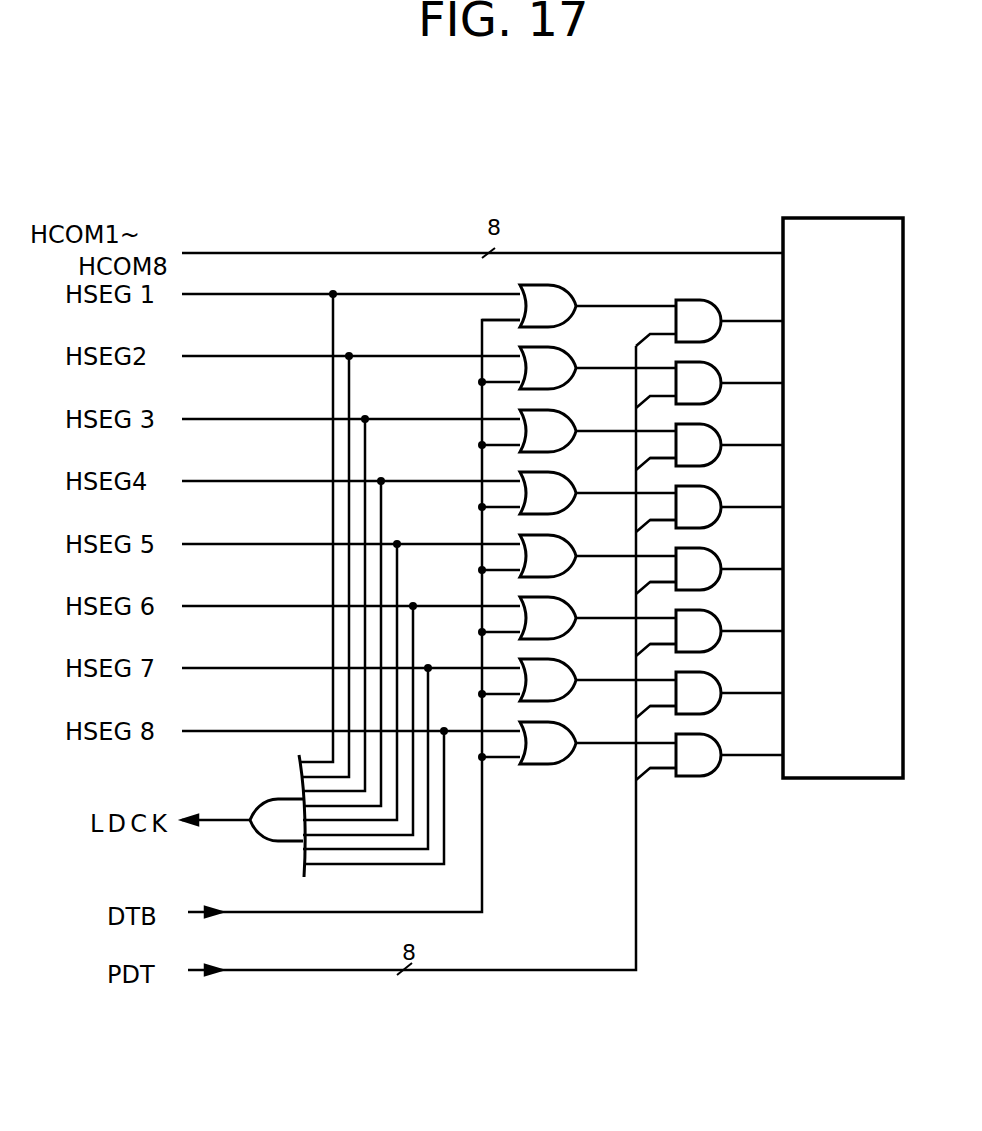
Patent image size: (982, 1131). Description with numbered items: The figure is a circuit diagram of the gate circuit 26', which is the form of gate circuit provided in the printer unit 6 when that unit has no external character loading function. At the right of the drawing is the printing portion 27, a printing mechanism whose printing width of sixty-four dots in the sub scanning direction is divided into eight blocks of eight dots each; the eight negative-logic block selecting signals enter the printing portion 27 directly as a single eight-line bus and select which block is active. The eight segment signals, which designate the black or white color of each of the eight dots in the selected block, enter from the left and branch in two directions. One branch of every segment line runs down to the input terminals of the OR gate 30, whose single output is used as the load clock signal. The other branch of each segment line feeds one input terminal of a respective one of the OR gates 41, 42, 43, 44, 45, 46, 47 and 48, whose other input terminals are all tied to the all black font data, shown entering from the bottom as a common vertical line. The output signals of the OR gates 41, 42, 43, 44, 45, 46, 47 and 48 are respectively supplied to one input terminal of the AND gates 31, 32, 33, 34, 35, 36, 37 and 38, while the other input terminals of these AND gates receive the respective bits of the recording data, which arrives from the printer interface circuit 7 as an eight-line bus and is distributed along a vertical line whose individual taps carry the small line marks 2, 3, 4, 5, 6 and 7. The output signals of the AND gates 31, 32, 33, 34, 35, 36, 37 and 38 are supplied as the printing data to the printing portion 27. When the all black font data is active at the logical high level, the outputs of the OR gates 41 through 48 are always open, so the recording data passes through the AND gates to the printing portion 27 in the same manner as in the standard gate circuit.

The gate circuit 26' is at (482, 556).
The printing portion 27 is at (843, 218).
The OR gate 30 is at (272, 797).
The AND gate 31 is at (724, 297).
The AND gate 32 is at (724, 375).
The AND gate 33 is at (724, 437).
The AND gate 34 is at (724, 499).
The AND gate 35 is at (724, 561).
The AND gate 36 is at (724, 623).
The AND gate 37 is at (724, 685).
The AND gate 38 is at (724, 747).
The OR gate 41 is at (566, 286).
The OR gate 42 is at (566, 348).
The OR gate 43 is at (566, 411).
The OR gate 44 is at (566, 473).
The OR gate 45 is at (566, 536).
The OR gate 46 is at (566, 598).
The OR gate 47 is at (566, 660).
The OR gate 48 is at (566, 723).
The print data line 2 is at (633, 448).
The print data line 3 is at (633, 510).
The print data line 4 is at (633, 572).
The print data line 5 is at (633, 634).
The printer unit 6 is at (633, 696).
The printer interface circuit 7 is at (633, 758).